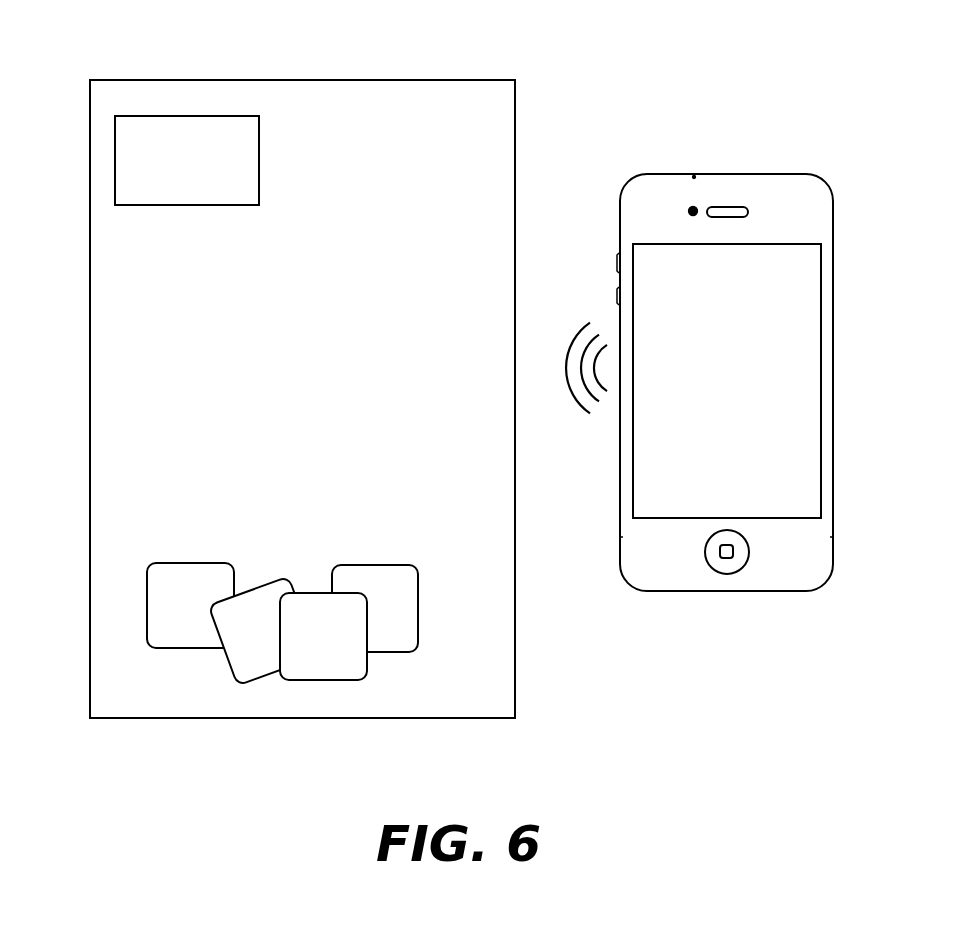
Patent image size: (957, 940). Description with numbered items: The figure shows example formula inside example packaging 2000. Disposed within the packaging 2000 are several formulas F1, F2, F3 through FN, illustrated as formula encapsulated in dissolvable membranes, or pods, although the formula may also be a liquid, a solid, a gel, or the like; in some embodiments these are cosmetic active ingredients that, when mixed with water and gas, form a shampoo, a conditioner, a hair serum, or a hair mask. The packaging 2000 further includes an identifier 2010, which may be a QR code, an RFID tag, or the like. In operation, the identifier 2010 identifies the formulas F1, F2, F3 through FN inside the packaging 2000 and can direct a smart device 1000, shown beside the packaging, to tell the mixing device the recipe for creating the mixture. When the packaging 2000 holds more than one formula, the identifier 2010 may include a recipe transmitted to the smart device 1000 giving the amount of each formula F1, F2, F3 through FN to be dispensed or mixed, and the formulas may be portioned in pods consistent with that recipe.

The packaging 2000 is at (86, 72).
The identifier 2010 is at (212, 171).
The smart device 1000 is at (835, 172).
The first formula F1 is at (183, 640).
The second formula F2 is at (263, 642).
The third formula F3 is at (325, 640).
The Nth formula FN is at (400, 640).